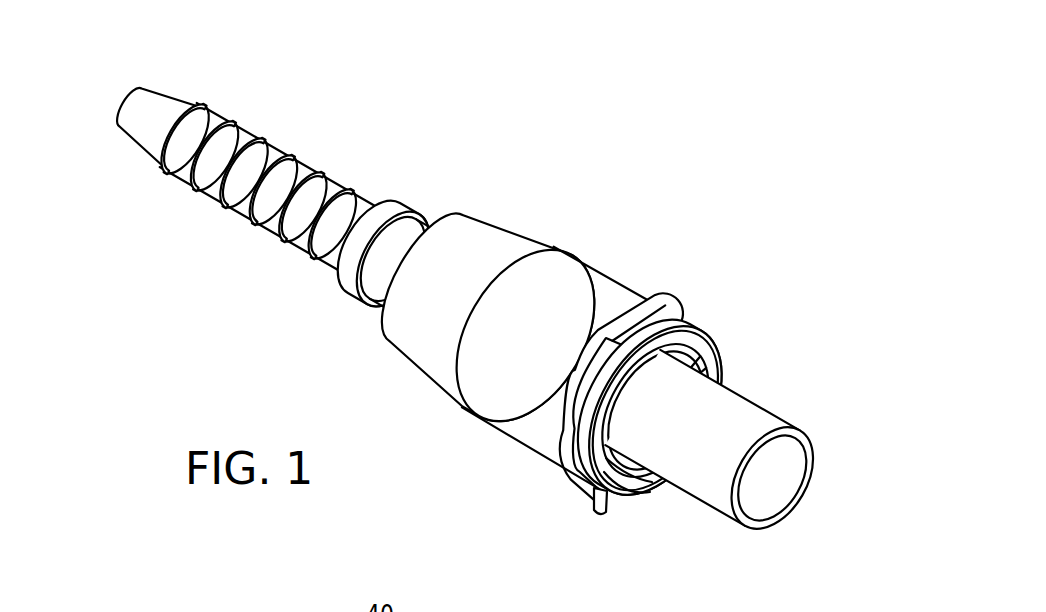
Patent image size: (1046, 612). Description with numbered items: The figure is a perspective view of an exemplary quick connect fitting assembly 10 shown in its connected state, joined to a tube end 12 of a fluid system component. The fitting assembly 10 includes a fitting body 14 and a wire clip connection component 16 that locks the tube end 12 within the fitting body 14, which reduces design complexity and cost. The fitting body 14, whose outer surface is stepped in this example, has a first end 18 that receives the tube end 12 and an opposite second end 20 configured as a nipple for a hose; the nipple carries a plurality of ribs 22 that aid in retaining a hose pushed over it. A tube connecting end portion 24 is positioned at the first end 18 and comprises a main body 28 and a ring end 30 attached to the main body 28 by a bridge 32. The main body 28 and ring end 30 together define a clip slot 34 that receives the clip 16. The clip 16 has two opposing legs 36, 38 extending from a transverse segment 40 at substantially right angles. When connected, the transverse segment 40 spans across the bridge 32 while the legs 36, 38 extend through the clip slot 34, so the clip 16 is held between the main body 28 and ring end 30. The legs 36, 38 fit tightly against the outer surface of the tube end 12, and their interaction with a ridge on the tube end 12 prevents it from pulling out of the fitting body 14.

The fitting assembly 10 is at (466, 306).
The tube end 12 is at (718, 494).
The fitting body 14 is at (354, 287).
The wire clip connection component 16 is at (680, 312).
The first end 18 is at (727, 366).
The second end 20 is at (147, 112).
The ribs 22 is at (233, 193).
The tube connecting end portion 24 is at (609, 353).
The main body 28 is at (495, 406).
The ring end 30 is at (627, 467).
The bridge 32 is at (688, 310).
The clip slot 34 is at (640, 300).
The leg 36 is at (598, 506).
The leg 38 is at (722, 370).
The transverse segment 40 is at (662, 290).